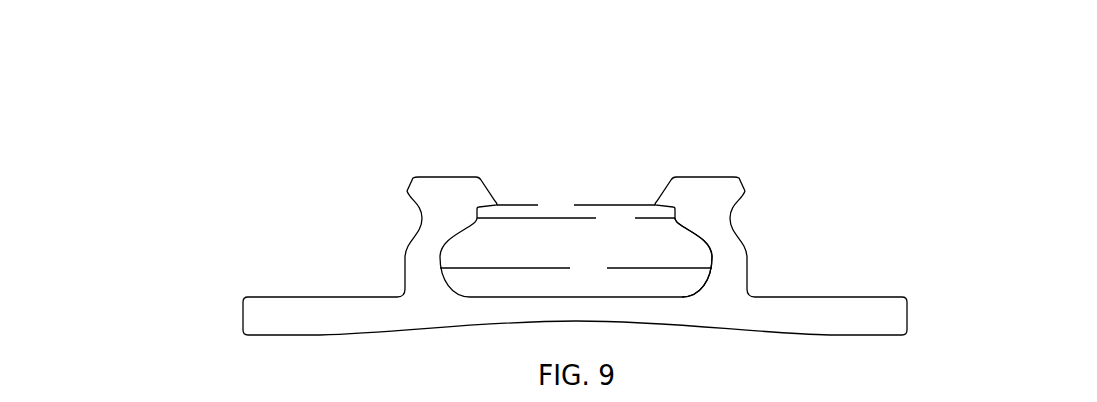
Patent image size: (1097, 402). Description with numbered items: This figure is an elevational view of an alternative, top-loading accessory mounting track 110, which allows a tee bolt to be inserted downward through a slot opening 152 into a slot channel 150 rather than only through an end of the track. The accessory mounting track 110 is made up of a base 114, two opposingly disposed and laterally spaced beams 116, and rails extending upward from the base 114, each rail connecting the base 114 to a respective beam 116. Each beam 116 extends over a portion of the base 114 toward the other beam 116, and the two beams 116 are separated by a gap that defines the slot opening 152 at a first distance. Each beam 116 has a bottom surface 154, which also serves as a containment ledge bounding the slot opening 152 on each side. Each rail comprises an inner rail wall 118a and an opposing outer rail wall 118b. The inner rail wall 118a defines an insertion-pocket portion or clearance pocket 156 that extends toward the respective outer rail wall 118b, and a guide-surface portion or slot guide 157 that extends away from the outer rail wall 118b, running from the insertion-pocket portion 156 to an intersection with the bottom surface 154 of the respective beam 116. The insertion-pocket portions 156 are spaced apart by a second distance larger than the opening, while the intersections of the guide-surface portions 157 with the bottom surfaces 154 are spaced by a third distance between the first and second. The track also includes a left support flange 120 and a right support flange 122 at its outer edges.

The accessory mounting track 110 is at (810, 115).
The base 114 is at (609, 296).
The beams 116 is at (428, 190).
The inner rail wall 118a is at (440, 258).
The outer rail wall 118b is at (406, 260).
The left support flange 120 is at (295, 296).
The right support flange 122 is at (843, 297).
The slot channel 150 is at (560, 263).
The slot opening 152 is at (560, 180).
The bottom surface 154 is at (490, 203).
The insertion-pocket portion 156 is at (712, 262).
The guide-surface portion 157 is at (693, 223).